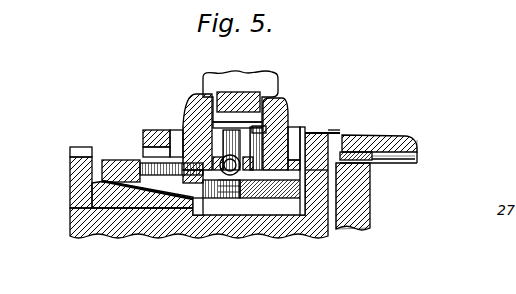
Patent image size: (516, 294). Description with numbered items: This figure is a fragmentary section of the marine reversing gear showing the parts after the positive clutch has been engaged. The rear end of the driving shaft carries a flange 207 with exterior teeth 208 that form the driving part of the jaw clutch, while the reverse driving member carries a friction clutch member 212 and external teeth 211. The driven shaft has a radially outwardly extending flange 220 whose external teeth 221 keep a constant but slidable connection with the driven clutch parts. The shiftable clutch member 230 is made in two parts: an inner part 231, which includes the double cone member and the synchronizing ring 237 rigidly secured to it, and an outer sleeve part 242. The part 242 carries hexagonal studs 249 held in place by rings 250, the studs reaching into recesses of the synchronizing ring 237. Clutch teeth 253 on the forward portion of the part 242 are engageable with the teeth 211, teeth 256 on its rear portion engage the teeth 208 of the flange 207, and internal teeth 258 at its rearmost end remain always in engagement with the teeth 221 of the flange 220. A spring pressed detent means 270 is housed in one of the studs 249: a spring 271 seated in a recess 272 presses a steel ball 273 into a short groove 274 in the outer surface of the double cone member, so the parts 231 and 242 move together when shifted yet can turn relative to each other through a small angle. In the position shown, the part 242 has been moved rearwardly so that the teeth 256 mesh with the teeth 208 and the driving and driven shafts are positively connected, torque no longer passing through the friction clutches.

The flange 207 is at (337, 220).
The exterior teeth 208 is at (360, 181).
The external teeth 211 is at (82, 147).
The friction clutch member 212 is at (117, 208).
The flange 220 is at (357, 215).
The external teeth 221 is at (378, 162).
The shiftable clutch member 230 is at (178, 118).
The inner clutch part 231 is at (97, 172).
The synchronizing ring 237 is at (80, 198).
The outer clutch part 242 is at (147, 134).
The stud 249 is at (213, 143).
The ring 250 is at (273, 100).
The clutch teeth 253 is at (143, 153).
The teeth 256 is at (352, 178).
The internal teeth 258 is at (416, 158).
The detent means 270 is at (229, 176).
The spring 271 is at (278, 137).
The recess 272 is at (300, 141).
The steel ball 273 is at (233, 185).
The groove 274 is at (172, 210).